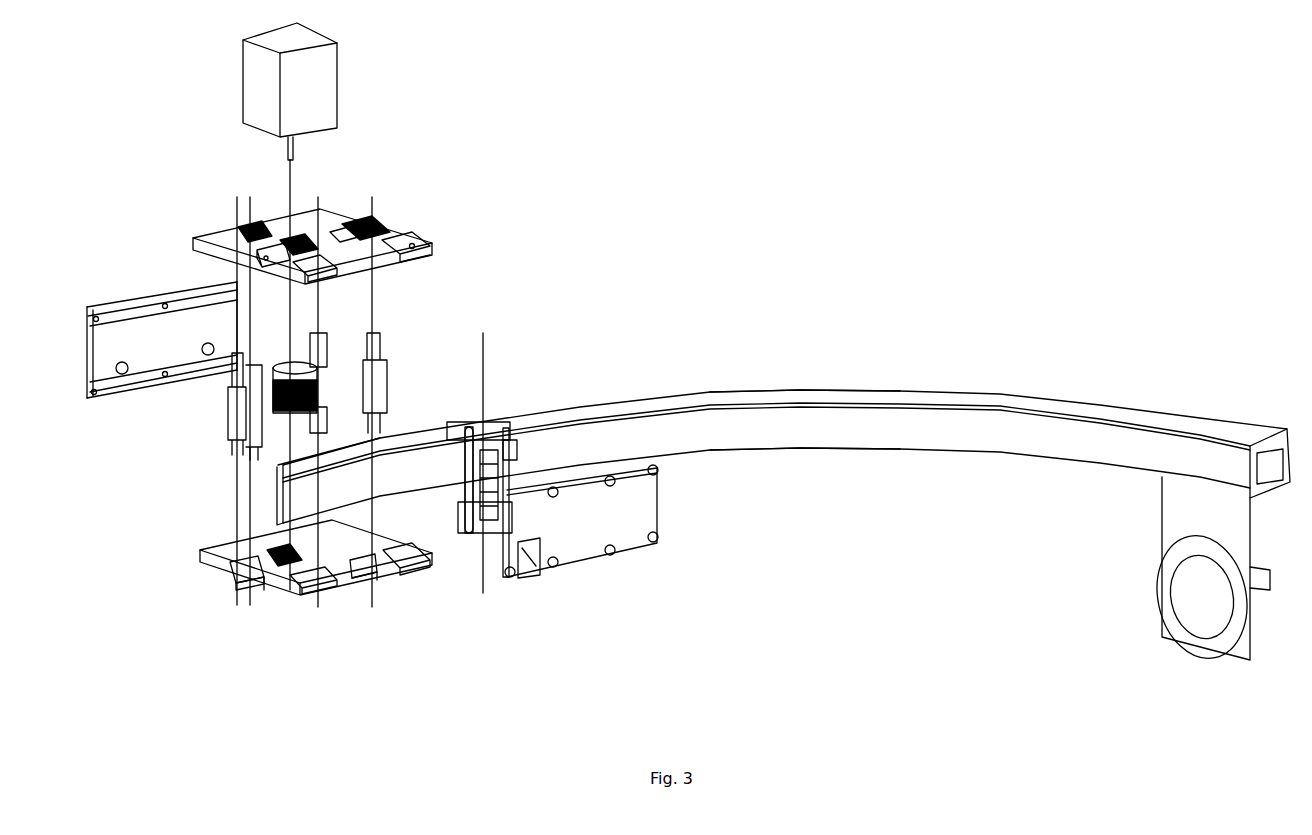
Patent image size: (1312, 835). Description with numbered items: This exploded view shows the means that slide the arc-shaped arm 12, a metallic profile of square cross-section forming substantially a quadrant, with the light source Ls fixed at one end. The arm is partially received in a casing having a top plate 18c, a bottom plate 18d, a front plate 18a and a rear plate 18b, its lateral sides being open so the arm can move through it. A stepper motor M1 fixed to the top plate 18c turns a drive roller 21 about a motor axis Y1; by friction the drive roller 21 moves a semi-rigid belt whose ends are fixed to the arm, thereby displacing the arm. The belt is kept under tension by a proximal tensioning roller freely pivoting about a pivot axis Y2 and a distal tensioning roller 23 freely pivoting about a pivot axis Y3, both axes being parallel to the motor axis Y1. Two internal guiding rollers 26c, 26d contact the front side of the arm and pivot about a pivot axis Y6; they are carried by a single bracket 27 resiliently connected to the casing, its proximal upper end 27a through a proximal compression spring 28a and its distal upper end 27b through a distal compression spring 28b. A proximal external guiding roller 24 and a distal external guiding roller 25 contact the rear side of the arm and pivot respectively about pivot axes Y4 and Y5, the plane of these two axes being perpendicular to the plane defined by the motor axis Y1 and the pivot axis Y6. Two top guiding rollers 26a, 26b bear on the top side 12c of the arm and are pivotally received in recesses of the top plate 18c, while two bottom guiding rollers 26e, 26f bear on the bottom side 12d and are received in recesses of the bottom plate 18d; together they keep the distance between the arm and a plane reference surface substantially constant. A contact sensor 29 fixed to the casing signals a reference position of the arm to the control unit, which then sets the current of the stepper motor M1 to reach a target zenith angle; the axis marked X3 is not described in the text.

The stepper motor M1 is at (340, 74).
The motor axis Y1 is at (288, 182).
The top plate 18c is at (412, 232).
The top guiding roller 26a is at (232, 218).
The proximal compression spring 28a is at (300, 218).
The distal compression spring 28b is at (345, 204).
The top guiding roller 26b is at (387, 214).
The rear plate 18b is at (110, 298).
The pivot axis Y5 is at (226, 502).
The pivot axis Y3 is at (255, 438).
The pivot axis Y4 is at (378, 298).
The pivot axis Y2 is at (258, 526).
The pivot axis Y6 is at (481, 333).
The transverse axis X3 is at (320, 437).
The proximal external guiding roller 24 is at (228, 440).
The drive roller 21 is at (283, 362).
The distal tensioning roller 23 is at (325, 345).
The distal external guiding roller 25 is at (388, 362).
The arc-shaped arm 12 is at (1050, 384).
The top side of the arc-shaped arm 12c is at (781, 392).
The bottom side of the arc-shaped arm 12d is at (785, 450).
The light source Ls is at (1195, 655).
The bracket 27 is at (490, 410).
The proximal upper end of the bracket 27a is at (458, 421).
The distal upper end of the bracket 27b is at (525, 414).
The internal guiding roller 26c is at (517, 462).
The internal guiding roller 26d is at (463, 513).
The front plate 18a is at (585, 568).
The contact sensor 29 is at (535, 575).
The bottom plate 18d is at (428, 582).
The bottom guiding roller 26f is at (260, 594).
The bottom guiding roller 26e is at (377, 574).